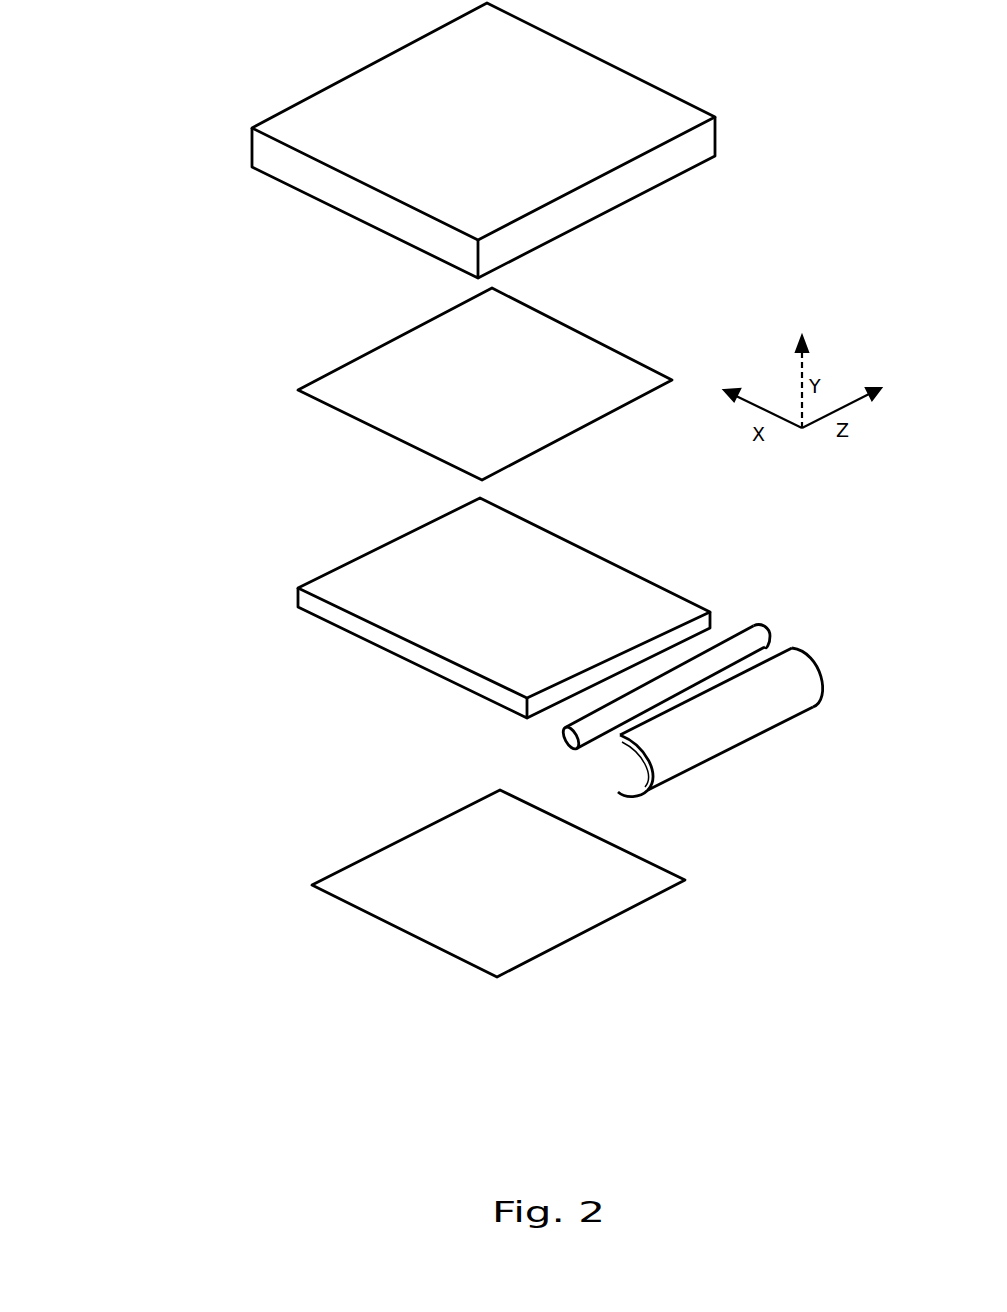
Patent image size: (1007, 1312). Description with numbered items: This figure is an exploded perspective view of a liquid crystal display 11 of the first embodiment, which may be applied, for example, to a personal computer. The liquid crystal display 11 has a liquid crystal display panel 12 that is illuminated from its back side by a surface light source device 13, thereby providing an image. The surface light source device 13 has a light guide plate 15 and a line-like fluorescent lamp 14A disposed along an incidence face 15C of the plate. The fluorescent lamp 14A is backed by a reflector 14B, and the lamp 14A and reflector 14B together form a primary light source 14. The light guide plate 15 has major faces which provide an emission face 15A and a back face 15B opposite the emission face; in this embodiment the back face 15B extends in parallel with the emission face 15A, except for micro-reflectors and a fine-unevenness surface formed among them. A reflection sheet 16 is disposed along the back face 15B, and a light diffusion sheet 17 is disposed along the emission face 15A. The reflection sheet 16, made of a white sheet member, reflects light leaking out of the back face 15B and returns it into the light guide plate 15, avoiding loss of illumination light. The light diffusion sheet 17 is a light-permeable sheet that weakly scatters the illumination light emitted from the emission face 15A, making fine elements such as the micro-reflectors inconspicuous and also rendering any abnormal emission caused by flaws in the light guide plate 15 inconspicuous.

The liquid crystal display 11 is at (185, 1083).
The liquid crystal display panel 12 is at (417, 140).
The surface light source device 13 is at (295, 923).
The primary light source 14 is at (726, 655).
The fluorescent lamp 14A is at (703, 669).
The reflector 14B is at (755, 706).
The light guide plate 15 is at (504, 630).
The emission face 15A is at (504, 590).
The back face 15B is at (412, 675).
The incidence face 15C is at (595, 695).
The reflection sheet 16 is at (524, 883).
The light diffusion sheet 17 is at (495, 384).